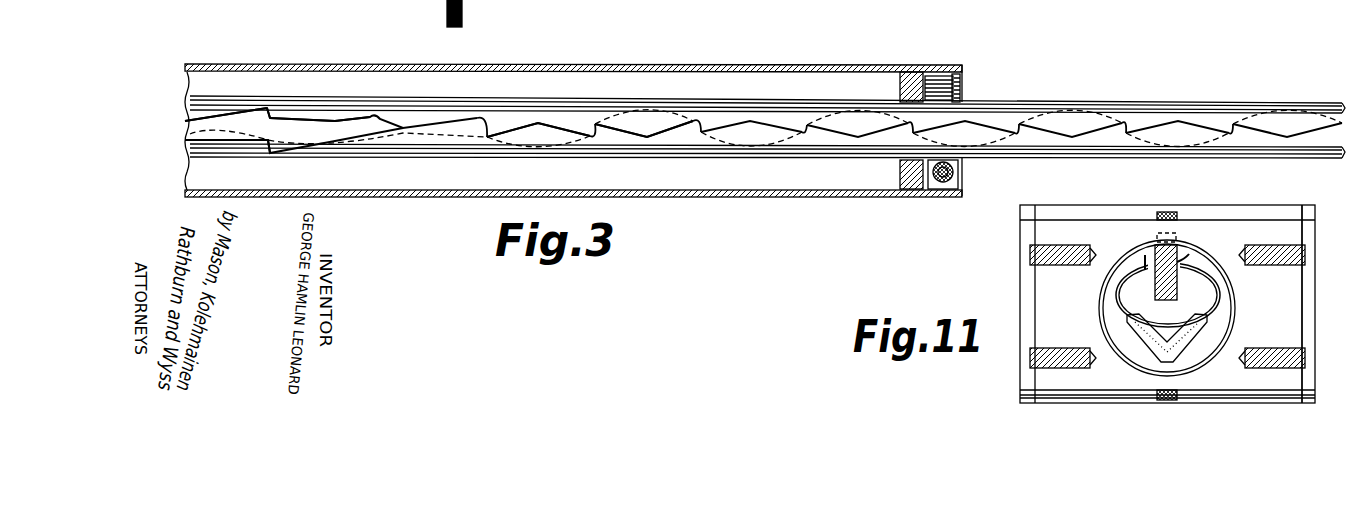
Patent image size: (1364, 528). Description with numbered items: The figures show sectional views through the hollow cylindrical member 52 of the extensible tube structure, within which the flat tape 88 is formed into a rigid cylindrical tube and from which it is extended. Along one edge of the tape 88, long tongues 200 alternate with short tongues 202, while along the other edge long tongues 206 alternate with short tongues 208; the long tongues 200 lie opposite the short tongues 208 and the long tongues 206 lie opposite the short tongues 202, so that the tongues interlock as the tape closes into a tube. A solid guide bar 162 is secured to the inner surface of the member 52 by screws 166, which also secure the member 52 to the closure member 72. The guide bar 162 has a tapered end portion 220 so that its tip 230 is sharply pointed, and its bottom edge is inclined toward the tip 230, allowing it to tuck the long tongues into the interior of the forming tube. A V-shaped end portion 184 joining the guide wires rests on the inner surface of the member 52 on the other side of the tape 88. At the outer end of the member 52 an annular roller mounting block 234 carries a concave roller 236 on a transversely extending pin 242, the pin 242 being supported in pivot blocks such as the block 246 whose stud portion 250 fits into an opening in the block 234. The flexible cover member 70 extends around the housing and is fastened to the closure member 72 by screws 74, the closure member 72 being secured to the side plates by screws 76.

In FIG. 3, the hollow cylindrical member 52 is at (633, 65).
In FIG. 11, the hollow cylindrical member 52 is at (1231, 309).
In FIG. 3, the tape 88 is at (1135, 103).
In FIG. 11, the tape 88 is at (1118, 300).
In FIG. 3, the long tongues 200 is at (328, 120).
In FIG. 3, the short tongues 202 is at (213, 112).
In FIG. 11, the short tongues 202 is at (1183, 268).
In FIG. 3, the short tongues 208 is at (538, 123).
In FIG. 3, the long tongues 206 is at (442, 120).
In FIG. 11, the long tongues 206 is at (1142, 265).
In FIG. 3, the guide bar 162 is at (190, 128).
In FIG. 11, the guide bar 162 is at (1176, 275).
In FIG. 3, the tapered end portion 220 is at (281, 118).
In FIG. 3, the tip 230 is at (394, 134).
In FIG. 3, the roller mounting block 234 is at (902, 176).
In FIG. 3, the pivot block 246 is at (932, 176).
In FIG. 3, the stud portion 250 is at (961, 80).
In FIG. 3, the pins 242 is at (945, 182).
In FIG. 3, the concave roller 236 is at (953, 172).
In FIG. 11, the flexible cover member 70 is at (1076, 205).
In FIG. 11, the closure member 72 is at (1262, 218).
In FIG. 11, the screws 74 is at (1166, 211).
In FIG. 11, the screws 166 is at (1180, 235).
In FIG. 11, the V-shaped end portion 184 is at (1147, 353).
In FIG. 11, the screws 76 is at (1090, 358).